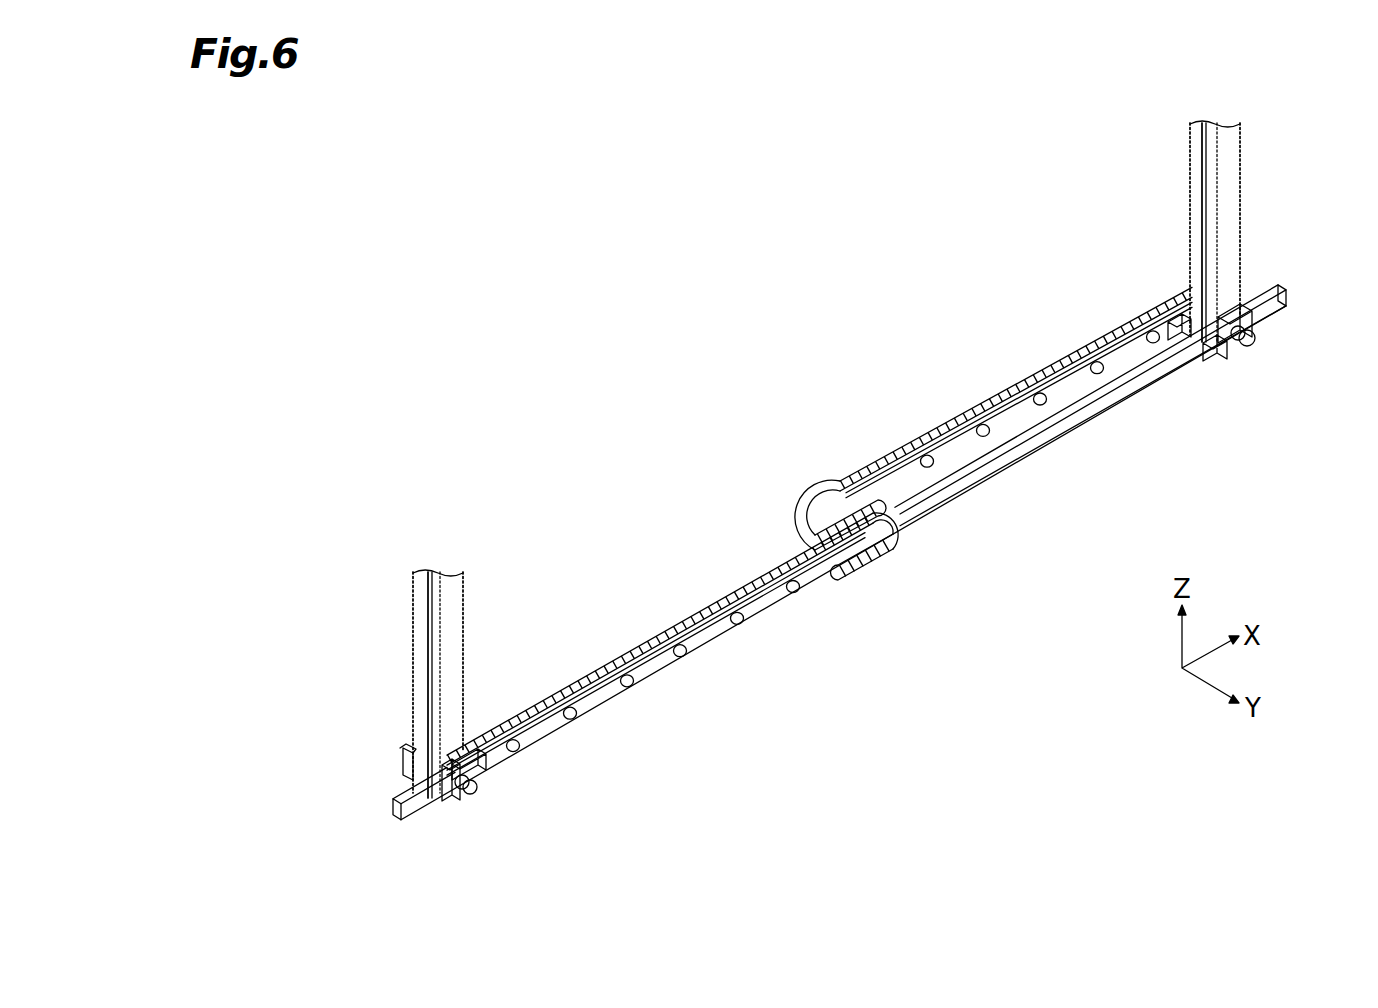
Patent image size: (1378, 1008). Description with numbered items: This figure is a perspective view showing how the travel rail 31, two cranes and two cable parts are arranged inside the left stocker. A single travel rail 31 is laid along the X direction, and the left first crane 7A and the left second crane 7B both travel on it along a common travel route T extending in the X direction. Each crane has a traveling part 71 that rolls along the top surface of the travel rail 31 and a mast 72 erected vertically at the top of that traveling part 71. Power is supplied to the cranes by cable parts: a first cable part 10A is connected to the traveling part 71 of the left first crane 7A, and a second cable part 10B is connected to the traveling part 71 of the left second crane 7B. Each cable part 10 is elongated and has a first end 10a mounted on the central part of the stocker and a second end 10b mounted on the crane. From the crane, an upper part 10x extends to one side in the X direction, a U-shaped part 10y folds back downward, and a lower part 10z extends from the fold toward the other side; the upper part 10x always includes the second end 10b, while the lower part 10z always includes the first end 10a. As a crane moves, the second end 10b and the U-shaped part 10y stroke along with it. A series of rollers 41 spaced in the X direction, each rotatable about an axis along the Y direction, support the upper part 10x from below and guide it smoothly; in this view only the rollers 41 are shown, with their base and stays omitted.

The left first stacker crane 7A is at (401, 668).
The left second stacker crane 7B is at (1252, 215).
The mast 72 is at (418, 612).
The traveling part 71 is at (441, 807).
The travel route T is at (1069, 442).
The travel rail 31 is at (984, 487).
The cable part 10 is at (819, 531).
The first cable part 10A is at (579, 669).
The second cable part 10B is at (945, 417).
The upper part 10x is at (1047, 372).
The U-shaped part 10y is at (812, 512).
The lower part 10z is at (808, 518).
The first end 10a is at (850, 503).
The second end 10b is at (1190, 300).
The roller 41 is at (1100, 370).